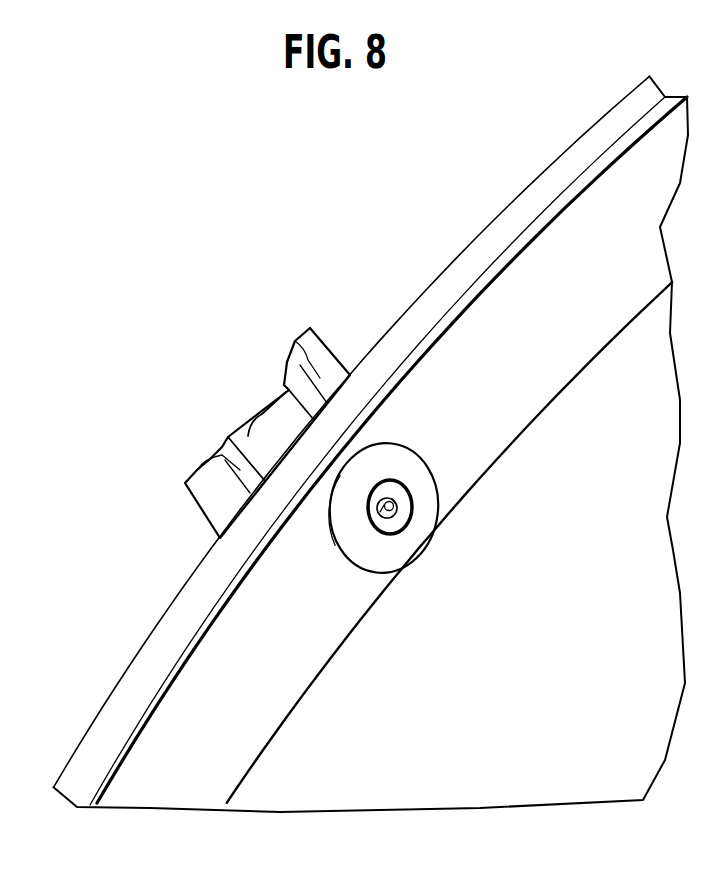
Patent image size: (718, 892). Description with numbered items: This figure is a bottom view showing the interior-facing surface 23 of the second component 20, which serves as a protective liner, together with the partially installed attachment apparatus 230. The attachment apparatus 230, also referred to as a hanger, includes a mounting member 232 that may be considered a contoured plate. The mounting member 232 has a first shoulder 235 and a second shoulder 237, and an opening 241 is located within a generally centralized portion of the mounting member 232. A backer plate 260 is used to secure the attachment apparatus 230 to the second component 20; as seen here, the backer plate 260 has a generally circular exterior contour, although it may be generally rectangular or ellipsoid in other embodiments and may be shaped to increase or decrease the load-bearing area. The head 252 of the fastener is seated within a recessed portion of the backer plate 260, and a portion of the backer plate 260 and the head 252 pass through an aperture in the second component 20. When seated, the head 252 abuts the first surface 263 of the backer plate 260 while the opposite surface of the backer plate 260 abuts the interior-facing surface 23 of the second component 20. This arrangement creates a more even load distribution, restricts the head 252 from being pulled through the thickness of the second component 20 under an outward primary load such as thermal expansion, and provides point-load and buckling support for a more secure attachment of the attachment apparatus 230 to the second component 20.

The second component 20 is at (613, 217).
The interior-facing surface 23 is at (576, 337).
The attachment apparatus 230 is at (187, 523).
The mounting member 232 is at (227, 438).
The first shoulder 235 is at (193, 472).
The second shoulder 237 is at (310, 336).
The opening 241 is at (277, 428).
The head 252 is at (381, 524).
The backer plate 260 is at (390, 453).
The first surface 263 is at (407, 560).